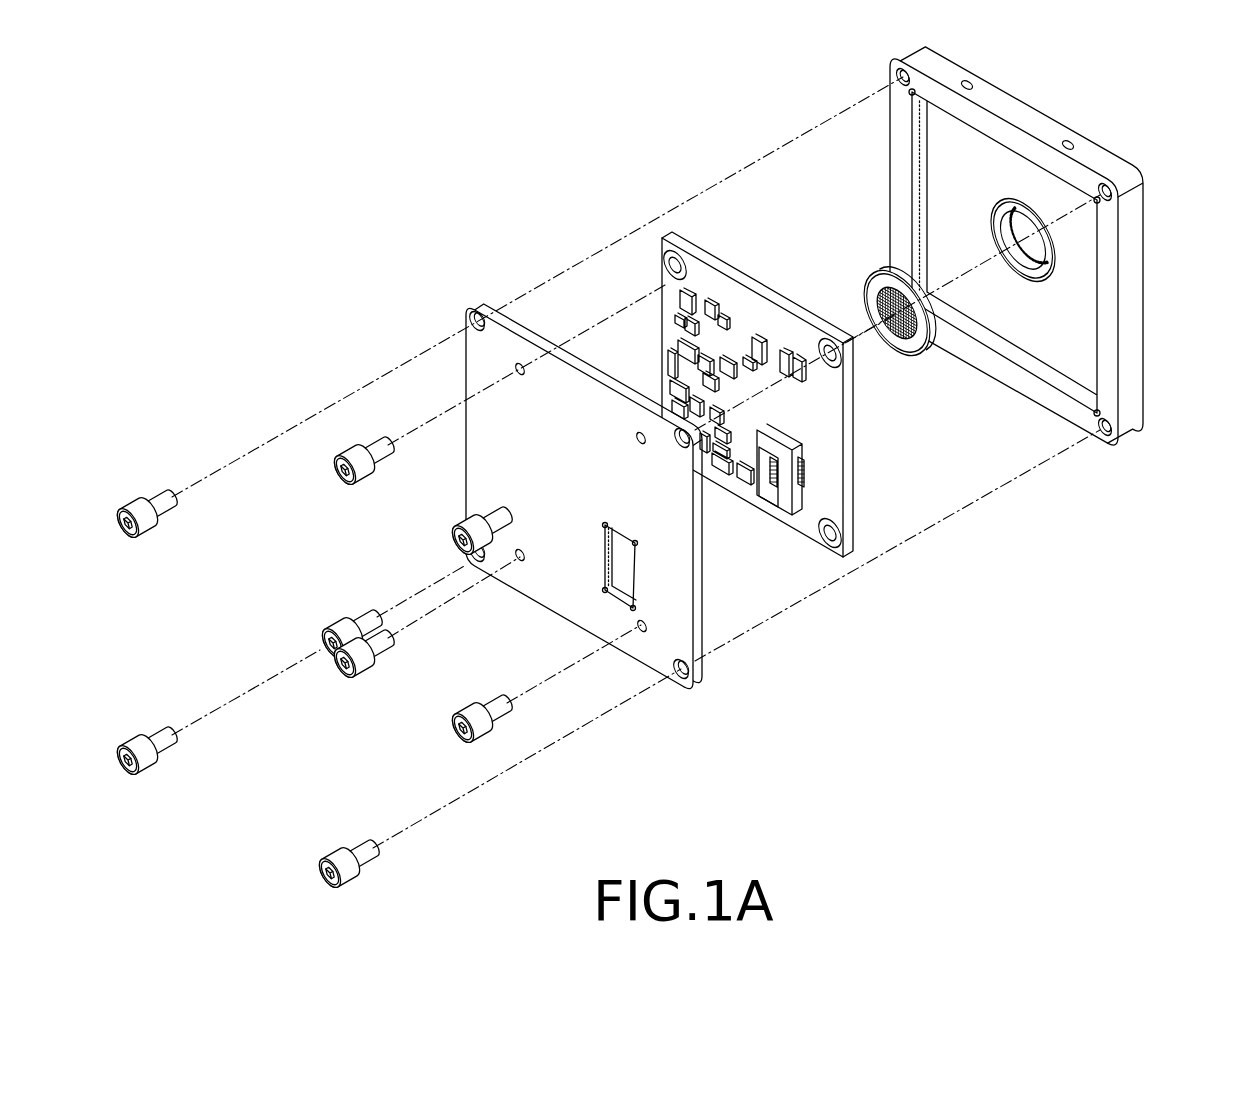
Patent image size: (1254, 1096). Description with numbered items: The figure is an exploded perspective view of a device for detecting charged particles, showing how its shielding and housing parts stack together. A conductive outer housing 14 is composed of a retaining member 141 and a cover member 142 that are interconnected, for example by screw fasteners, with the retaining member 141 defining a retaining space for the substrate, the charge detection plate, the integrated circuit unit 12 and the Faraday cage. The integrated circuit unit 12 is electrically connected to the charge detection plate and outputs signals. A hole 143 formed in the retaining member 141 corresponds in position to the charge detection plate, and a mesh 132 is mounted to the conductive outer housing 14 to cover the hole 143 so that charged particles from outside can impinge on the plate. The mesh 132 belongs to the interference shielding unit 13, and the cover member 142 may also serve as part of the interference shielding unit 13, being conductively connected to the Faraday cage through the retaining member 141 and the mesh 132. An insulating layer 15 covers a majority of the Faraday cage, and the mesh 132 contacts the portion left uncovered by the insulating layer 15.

The integrated circuit unit 12 is at (676, 364).
The interference shielding unit 13 is at (940, 354).
The mesh 132 is at (912, 342).
The conductive outer housing 14 is at (1057, 233).
The retaining member 141 is at (1040, 128).
The cover member 142 is at (498, 342).
The hole 143 is at (1052, 247).
The insulating layer 15 is at (726, 379).